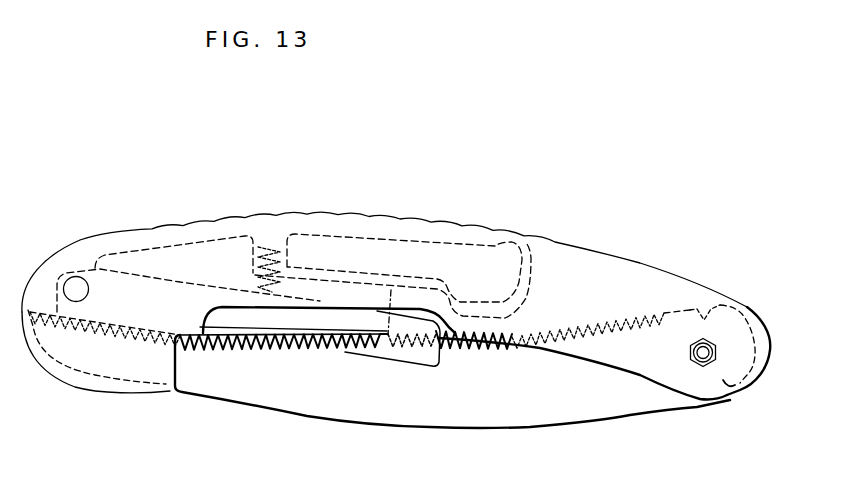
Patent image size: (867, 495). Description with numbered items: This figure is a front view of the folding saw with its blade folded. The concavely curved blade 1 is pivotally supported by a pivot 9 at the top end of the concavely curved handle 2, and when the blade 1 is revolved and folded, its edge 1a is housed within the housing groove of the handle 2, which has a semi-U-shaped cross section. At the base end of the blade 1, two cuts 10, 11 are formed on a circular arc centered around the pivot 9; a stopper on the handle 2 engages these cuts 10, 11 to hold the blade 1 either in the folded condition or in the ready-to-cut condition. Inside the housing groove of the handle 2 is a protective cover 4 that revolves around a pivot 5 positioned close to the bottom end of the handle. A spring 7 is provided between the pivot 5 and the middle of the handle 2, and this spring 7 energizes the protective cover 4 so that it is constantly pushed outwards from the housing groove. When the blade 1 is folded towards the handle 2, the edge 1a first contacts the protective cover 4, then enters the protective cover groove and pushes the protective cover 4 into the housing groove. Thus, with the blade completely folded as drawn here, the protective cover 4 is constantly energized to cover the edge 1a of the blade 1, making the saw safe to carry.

The blade 1 is at (585, 392).
The edge 1a is at (392, 290).
The handle 2 is at (603, 273).
The protective cover 4 is at (270, 312).
The pivot 5 is at (77, 276).
The spring 7 is at (275, 242).
The pivot 9 is at (703, 363).
The cut 10 is at (736, 392).
The cut 11 is at (706, 303).